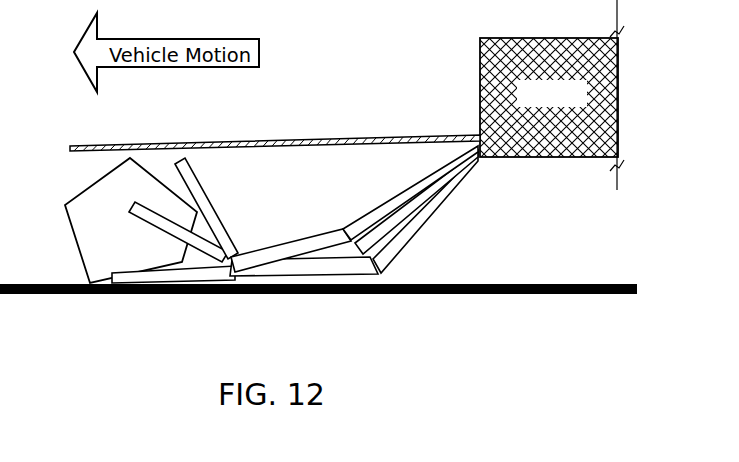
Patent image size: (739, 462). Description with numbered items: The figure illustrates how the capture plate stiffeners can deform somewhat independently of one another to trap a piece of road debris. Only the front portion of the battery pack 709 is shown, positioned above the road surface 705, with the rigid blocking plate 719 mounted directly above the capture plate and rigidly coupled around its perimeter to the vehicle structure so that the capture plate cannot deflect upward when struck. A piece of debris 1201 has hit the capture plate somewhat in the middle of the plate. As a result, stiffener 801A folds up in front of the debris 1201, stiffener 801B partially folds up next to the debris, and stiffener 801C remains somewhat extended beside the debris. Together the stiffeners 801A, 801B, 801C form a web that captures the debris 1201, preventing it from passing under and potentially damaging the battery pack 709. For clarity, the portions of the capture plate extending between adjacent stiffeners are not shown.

The road surface 705 is at (568, 274).
The battery pack 709 is at (570, 102).
The blocking plate 719 is at (320, 142).
The debris 1201 is at (147, 251).
The stiffener 801A is at (207, 212).
The stiffener 801B is at (170, 228).
The stiffener 801C is at (146, 280).